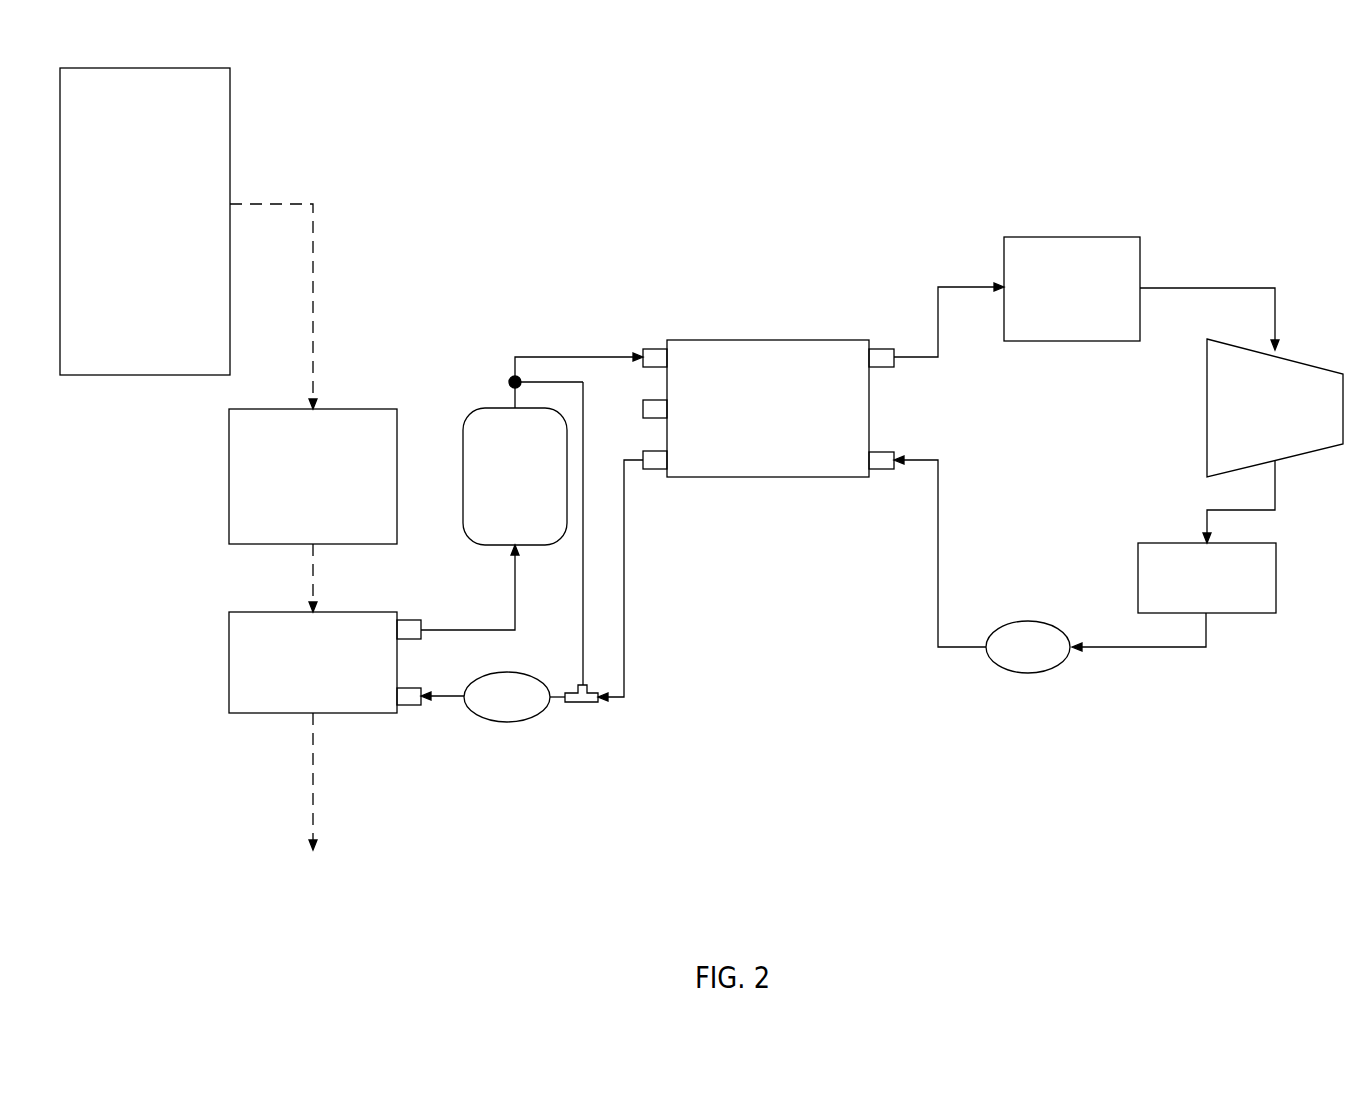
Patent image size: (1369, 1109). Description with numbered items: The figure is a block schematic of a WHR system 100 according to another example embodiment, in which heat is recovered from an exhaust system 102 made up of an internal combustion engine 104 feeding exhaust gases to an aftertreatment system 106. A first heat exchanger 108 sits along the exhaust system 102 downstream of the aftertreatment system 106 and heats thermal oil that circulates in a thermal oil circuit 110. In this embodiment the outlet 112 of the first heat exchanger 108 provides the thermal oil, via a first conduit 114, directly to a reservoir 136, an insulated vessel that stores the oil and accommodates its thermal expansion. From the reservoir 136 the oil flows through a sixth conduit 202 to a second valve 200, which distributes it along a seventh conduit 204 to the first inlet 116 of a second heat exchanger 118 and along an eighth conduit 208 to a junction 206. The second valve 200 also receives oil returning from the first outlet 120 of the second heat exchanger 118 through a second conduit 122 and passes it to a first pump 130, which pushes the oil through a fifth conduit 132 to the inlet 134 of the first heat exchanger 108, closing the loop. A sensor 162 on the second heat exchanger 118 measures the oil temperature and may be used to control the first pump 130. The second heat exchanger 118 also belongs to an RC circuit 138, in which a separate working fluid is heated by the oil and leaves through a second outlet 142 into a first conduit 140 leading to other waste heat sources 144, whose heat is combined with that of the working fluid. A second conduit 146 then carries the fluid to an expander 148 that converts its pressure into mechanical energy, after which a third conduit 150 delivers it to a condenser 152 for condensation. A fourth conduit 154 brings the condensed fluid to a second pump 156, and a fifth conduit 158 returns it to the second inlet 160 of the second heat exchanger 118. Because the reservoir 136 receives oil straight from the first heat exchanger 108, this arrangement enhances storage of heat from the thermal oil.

The WHR system 100 is at (1278, 155).
The exhaust system 102 is at (333, 240).
The internal combustion engine 104 is at (232, 172).
The aftertreatment system 106 is at (229, 478).
The first heat exchanger 108 is at (229, 660).
The thermal oil circuit 110 is at (504, 291).
The outlet 112 is at (421, 622).
The first conduit 114 is at (515, 628).
The first inlet 116 is at (641, 346).
The second heat exchanger 118 is at (758, 340).
The first outlet 120 is at (657, 470).
The second conduit 122 is at (626, 580).
The first pump 130 is at (507, 722).
The fifth conduit 132 is at (457, 697).
The inlet 134 is at (421, 706).
The reservoir 136 is at (463, 450).
The RC circuit 138 is at (1277, 272).
The first conduit 140 is at (940, 340).
The second outlet 142 is at (895, 346).
The other waste heat sources 144 is at (1085, 237).
The second conduit 146 is at (1215, 288).
The expander 148 is at (1207, 410).
The third conduit 150 is at (1205, 518).
The condenser 152 is at (1278, 580).
The fourth conduit 154 is at (1145, 648).
The second pump 156 is at (1033, 622).
The fifth conduit 158 is at (935, 615).
The second inlet 160 is at (897, 470).
The sensor 162 is at (641, 408).
The second valve 200 is at (521, 379).
The sixth conduit 202 is at (513, 402).
The seventh conduit 204 is at (553, 357).
The junction 206 is at (590, 703).
The eighth conduit 208 is at (582, 648).